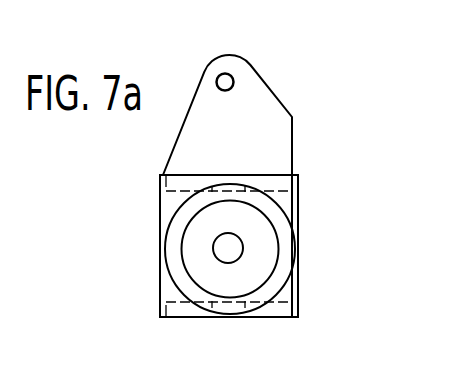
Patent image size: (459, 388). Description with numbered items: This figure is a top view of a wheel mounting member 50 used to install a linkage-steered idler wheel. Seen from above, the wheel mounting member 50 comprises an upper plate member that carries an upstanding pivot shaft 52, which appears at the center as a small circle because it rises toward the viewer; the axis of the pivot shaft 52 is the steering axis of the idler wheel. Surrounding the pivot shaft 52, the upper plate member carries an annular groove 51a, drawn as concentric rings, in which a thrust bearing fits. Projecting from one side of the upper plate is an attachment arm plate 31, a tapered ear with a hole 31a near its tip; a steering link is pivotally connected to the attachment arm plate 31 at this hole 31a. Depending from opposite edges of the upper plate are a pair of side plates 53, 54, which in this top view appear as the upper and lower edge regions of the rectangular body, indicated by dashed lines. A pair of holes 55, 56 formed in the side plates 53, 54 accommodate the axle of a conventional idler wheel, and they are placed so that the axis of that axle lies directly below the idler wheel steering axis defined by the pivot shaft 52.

The wheel mounting member 50 is at (302, 142).
The attachment arm plate 31 is at (268, 87).
The hole 31a is at (221, 73).
The annular groove 51a is at (165, 233).
The pivot shaft 52 is at (236, 234).
The side plate 53 is at (166, 310).
The side plate 54 is at (166, 182).
The hole 55 is at (248, 316).
The hole 56 is at (205, 176).